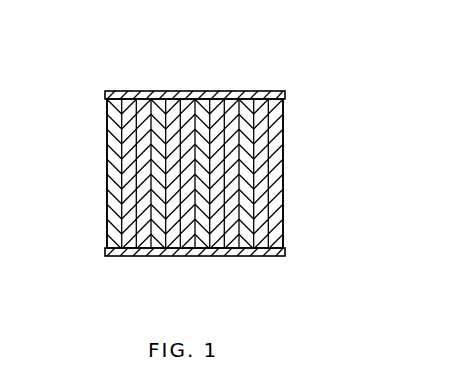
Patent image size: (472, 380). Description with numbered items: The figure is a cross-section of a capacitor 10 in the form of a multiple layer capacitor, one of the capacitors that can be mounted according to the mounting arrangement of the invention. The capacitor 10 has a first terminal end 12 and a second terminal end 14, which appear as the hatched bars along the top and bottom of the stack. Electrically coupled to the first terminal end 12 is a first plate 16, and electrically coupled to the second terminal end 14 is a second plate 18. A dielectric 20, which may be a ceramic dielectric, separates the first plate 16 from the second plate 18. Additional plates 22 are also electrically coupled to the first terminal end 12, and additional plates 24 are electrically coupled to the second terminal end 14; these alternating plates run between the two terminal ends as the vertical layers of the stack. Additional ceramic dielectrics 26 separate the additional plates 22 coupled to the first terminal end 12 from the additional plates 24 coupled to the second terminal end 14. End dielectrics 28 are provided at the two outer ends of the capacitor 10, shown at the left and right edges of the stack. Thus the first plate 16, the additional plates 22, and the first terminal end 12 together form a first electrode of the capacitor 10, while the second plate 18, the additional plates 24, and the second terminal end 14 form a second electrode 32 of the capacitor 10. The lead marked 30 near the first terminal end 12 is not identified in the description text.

The capacitor 10 is at (345, 114).
The first terminal end 12 is at (118, 92).
The second terminal end 14 is at (113, 258).
The first plate 16 is at (138, 98).
The second plate 18 is at (159, 258).
The dielectric 20 is at (166, 104).
The additional plates 22 is at (238, 95).
The additional plates 24 is at (262, 243).
The additional ceramic dielectrics 26 is at (186, 238).
The end dielectrics 28 is at (107, 163).
The top terminal plate 30 is at (272, 92).
The second electrode 32 is at (284, 258).